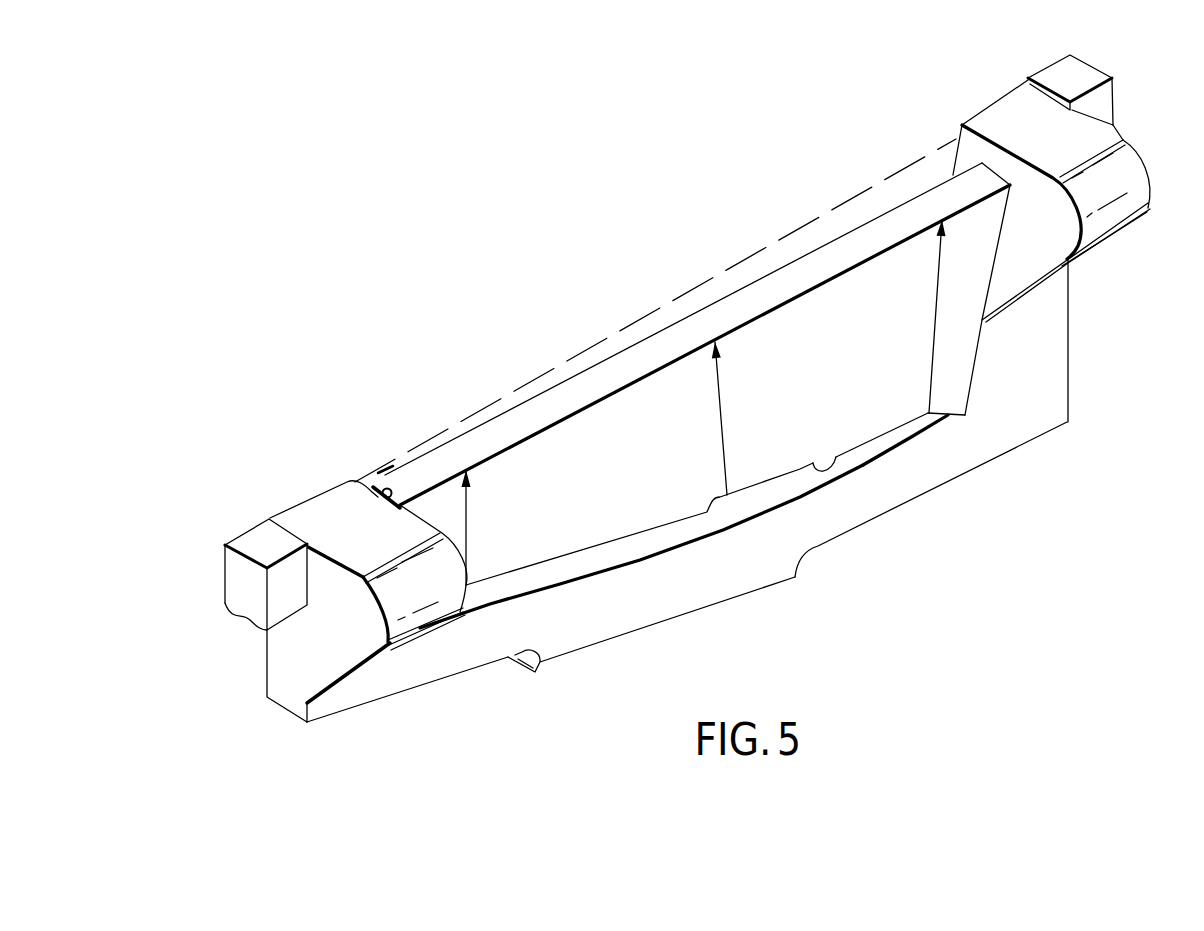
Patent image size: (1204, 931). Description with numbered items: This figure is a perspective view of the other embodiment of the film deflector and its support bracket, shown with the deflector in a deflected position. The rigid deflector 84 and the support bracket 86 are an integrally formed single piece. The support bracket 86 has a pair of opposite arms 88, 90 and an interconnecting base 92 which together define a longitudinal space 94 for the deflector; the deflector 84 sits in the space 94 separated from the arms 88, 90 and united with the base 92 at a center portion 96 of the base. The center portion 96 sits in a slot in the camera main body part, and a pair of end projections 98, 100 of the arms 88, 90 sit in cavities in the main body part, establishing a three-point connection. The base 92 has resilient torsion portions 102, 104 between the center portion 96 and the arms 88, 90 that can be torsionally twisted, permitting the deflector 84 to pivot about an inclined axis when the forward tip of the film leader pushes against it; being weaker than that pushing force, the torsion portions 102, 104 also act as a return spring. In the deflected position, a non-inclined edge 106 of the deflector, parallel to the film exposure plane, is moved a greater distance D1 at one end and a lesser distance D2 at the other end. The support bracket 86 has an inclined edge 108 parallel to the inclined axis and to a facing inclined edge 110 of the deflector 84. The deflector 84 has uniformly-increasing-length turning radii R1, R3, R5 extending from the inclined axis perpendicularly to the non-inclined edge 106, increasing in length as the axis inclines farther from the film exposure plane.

The deflector 84 is at (612, 447).
The support bracket 86 is at (943, 455).
The arm 88 is at (307, 513).
The arm 90 is at (1007, 110).
The base 92 is at (848, 515).
The longitudinal space 94 is at (372, 500).
The center portion 96 is at (698, 600).
The end projection 98 is at (245, 541).
The end projection 100 is at (1090, 70).
The resilient torsion portion 102 is at (433, 672).
The resilient torsion portion 104 is at (883, 495).
The non-inclined edge 106 is at (718, 312).
The inclined edge 108 is at (766, 490).
The inclined edge 110 is at (834, 455).
The greater distance D1 is at (386, 470).
The lesser distance D2 is at (955, 175).
The turning radius R1 is at (470, 526).
The turning radius R3 is at (724, 402).
The turning radius R5 is at (936, 310).